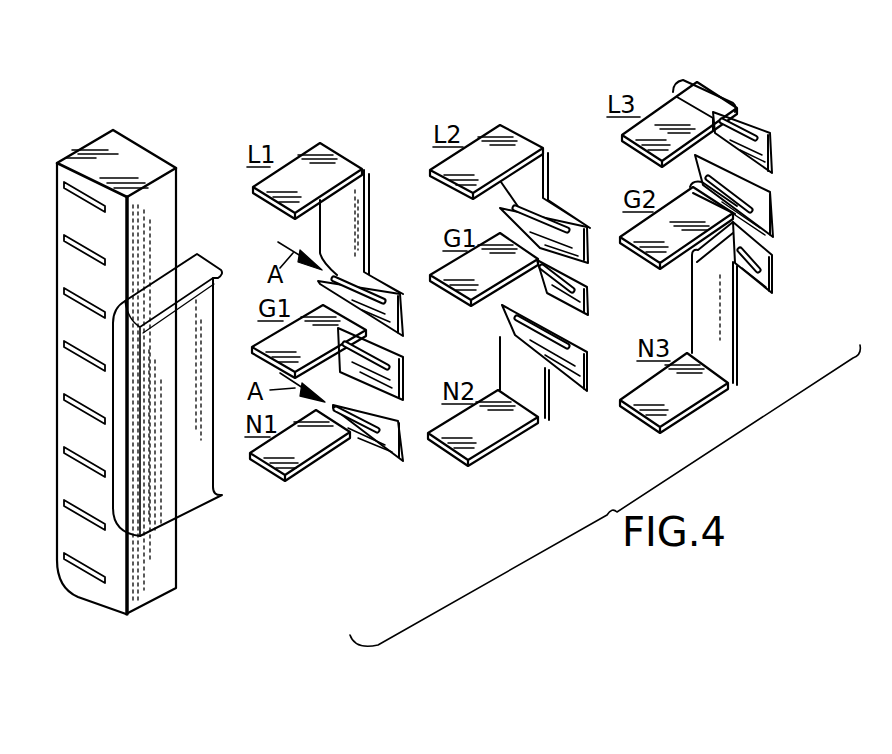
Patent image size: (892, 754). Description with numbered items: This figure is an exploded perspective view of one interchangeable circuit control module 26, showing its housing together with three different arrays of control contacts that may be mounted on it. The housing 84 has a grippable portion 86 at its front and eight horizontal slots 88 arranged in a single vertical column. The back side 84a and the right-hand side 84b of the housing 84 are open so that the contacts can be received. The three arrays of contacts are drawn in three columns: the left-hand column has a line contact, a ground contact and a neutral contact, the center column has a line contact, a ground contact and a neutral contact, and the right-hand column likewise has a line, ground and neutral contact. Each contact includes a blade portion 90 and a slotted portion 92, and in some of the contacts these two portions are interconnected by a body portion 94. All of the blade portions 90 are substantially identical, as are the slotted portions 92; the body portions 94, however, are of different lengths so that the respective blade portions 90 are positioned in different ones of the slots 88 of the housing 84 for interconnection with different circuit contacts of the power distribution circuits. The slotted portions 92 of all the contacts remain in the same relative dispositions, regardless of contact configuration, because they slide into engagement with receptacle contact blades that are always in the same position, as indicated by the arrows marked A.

The circuit control module 26 is at (137, 82).
The housing 84 is at (172, 160).
The back side 84a is at (104, 97).
The right-hand side 84b is at (147, 147).
The grippable portion 86 is at (200, 270).
The horizontal slots 88 is at (82, 200).
The blade portion 90 is at (287, 170).
The slotted portion 92 is at (395, 288).
The body portion 94 is at (366, 195).